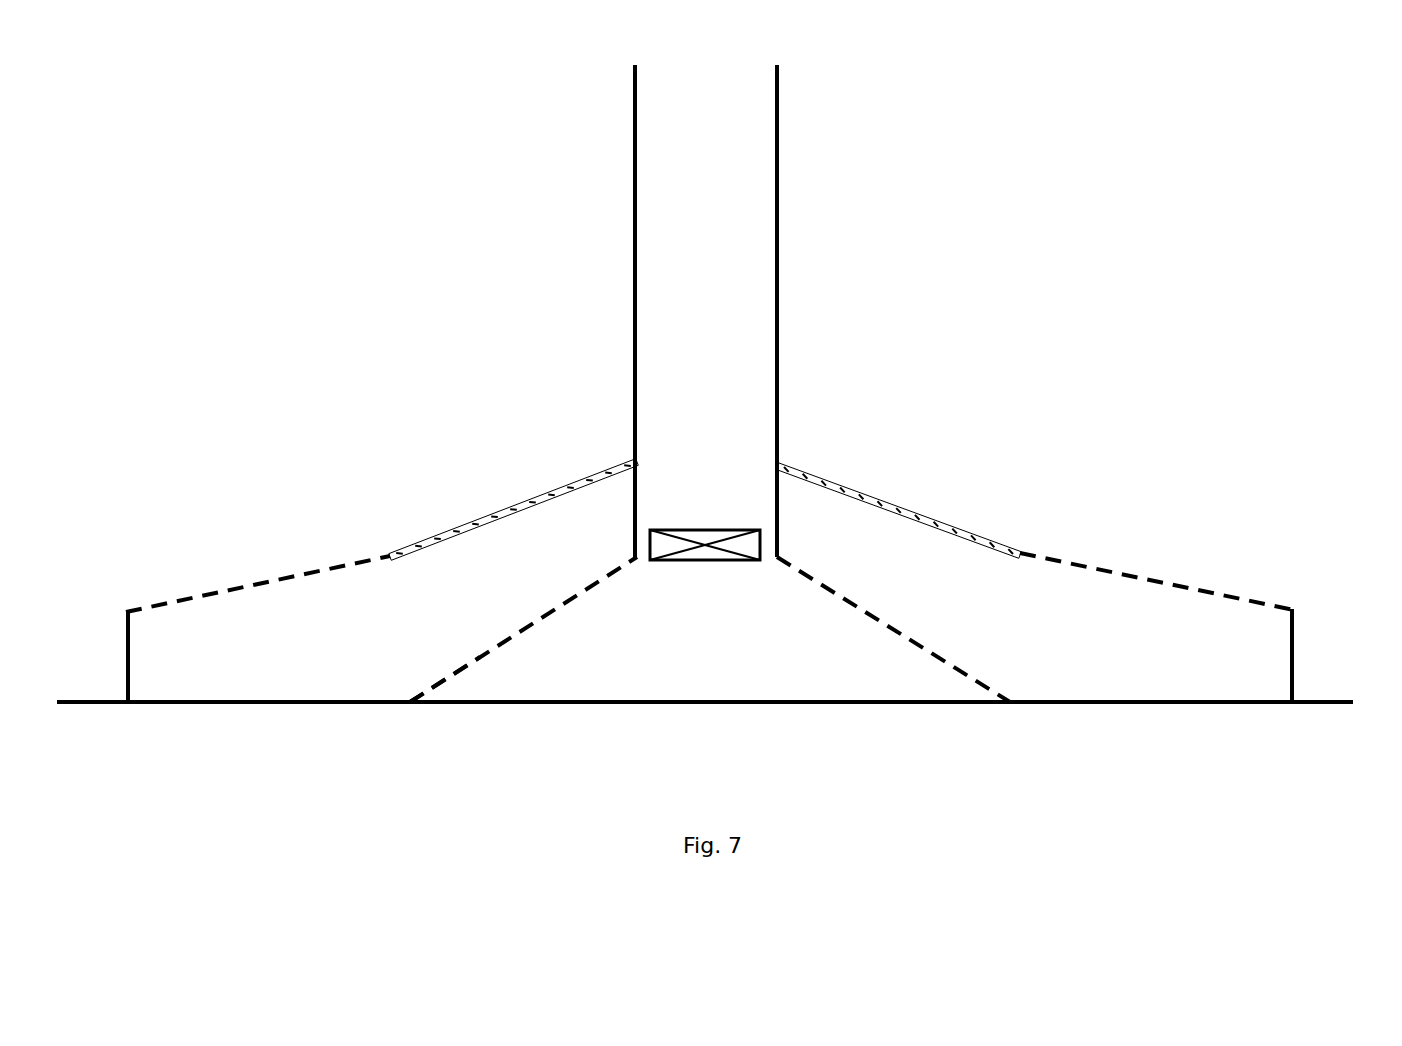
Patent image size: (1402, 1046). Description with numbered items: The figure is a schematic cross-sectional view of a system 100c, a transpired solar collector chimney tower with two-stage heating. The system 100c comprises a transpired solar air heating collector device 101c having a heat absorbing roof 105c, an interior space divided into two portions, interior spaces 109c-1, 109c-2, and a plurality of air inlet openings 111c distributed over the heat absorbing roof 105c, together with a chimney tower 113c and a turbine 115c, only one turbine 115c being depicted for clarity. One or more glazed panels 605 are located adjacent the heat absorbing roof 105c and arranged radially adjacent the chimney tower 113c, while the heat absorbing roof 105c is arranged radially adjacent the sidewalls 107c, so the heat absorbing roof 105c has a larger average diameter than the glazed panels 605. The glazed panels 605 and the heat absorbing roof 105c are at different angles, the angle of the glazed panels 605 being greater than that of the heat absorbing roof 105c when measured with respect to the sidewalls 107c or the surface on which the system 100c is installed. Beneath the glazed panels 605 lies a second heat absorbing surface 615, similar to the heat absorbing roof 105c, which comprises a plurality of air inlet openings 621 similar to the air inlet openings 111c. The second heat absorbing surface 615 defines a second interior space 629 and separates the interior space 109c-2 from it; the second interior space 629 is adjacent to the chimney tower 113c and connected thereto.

The system 100c is at (292, 793).
The transpired solar air heating collector device 101c is at (345, 690).
The heat absorbing roof 105c is at (132, 609).
The sidewalls 107c is at (1293, 630).
The interior space 109c-1 is at (270, 657).
The interior space 109c-2 is at (515, 513).
The air inlet openings 111c is at (190, 599).
The chimney tower 113c is at (634, 296).
The turbine 115c is at (730, 530).
The glazed panels 605 is at (526, 506).
The second heat absorbing surface 615 is at (530, 618).
The air inlet openings 621 is at (463, 667).
The second interior space 629 is at (710, 631).